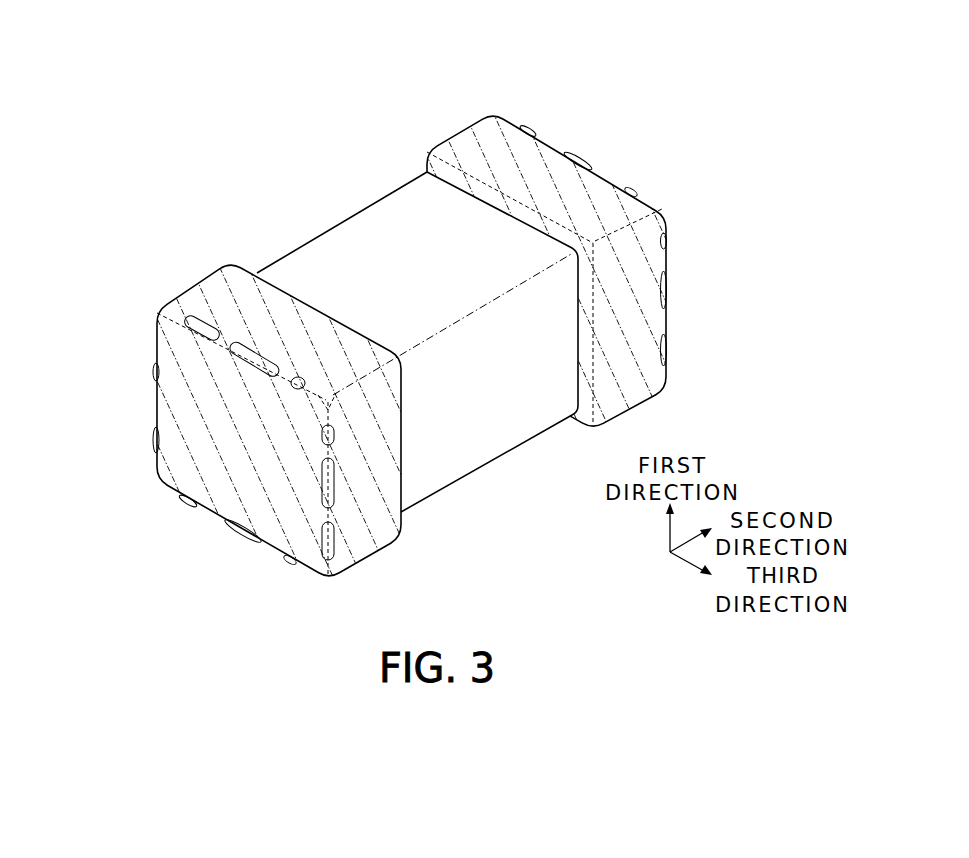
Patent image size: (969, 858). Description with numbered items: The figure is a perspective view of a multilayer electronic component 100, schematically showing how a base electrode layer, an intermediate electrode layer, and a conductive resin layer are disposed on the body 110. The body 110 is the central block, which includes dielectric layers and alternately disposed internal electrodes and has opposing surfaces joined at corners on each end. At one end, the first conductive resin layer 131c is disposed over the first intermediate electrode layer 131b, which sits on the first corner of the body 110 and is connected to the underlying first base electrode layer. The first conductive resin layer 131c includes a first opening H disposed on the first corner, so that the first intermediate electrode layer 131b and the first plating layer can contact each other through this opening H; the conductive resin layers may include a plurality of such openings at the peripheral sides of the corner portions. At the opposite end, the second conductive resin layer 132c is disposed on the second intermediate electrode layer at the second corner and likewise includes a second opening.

The multilayer electronic component 100 is at (197, 82).
The body 110 is at (347, 233).
The first intermediate electrode layer 131b is at (190, 334).
The first conductive resin layer 131c is at (207, 288).
The second conductive resin layer 132c is at (466, 143).
The first opening H is at (340, 542).